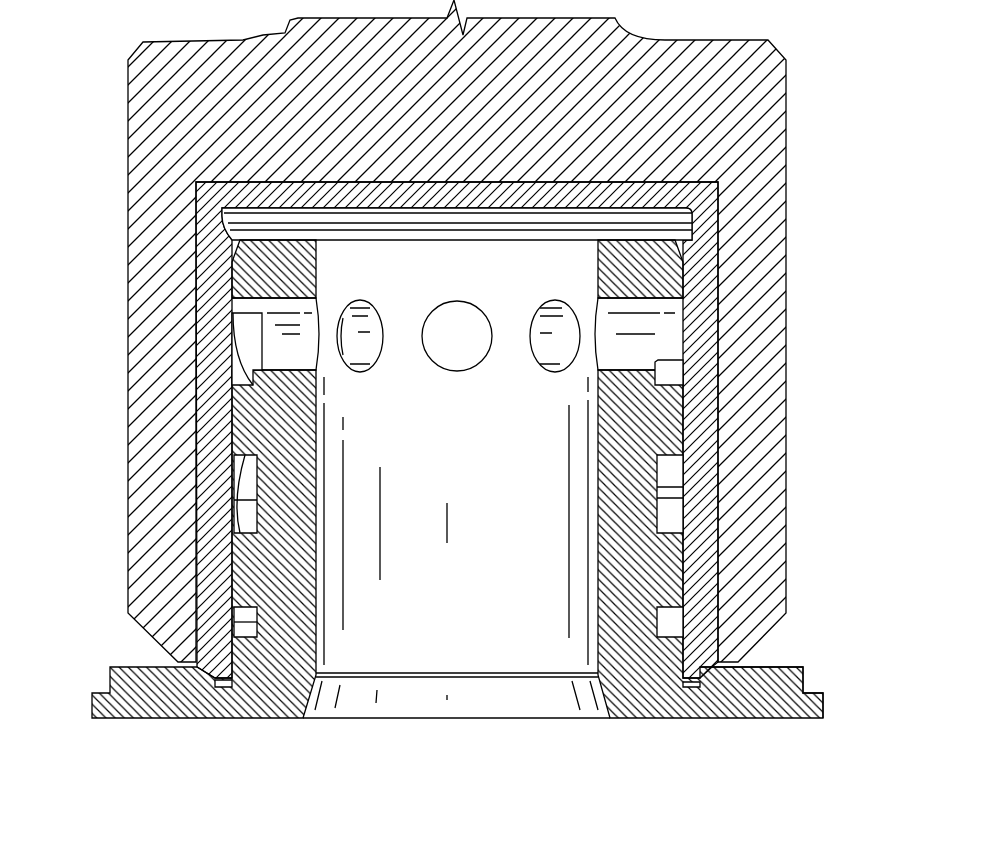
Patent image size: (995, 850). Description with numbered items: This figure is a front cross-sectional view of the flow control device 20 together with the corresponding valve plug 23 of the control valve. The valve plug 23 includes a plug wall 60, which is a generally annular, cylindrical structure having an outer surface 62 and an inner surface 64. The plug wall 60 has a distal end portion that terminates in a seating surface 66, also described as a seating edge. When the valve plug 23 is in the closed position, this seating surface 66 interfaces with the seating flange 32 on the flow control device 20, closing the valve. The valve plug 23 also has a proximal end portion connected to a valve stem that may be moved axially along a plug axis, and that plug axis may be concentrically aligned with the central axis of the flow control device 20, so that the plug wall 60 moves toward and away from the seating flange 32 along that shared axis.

The flow control device 20 is at (676, 242).
The valve plug 23 is at (447, 417).
The seating flange 32 is at (790, 667).
The plug wall 60 is at (150, 403).
The outer surface 62 is at (128, 283).
The inner surface 64 is at (240, 632).
The seating surface 66 is at (214, 680).